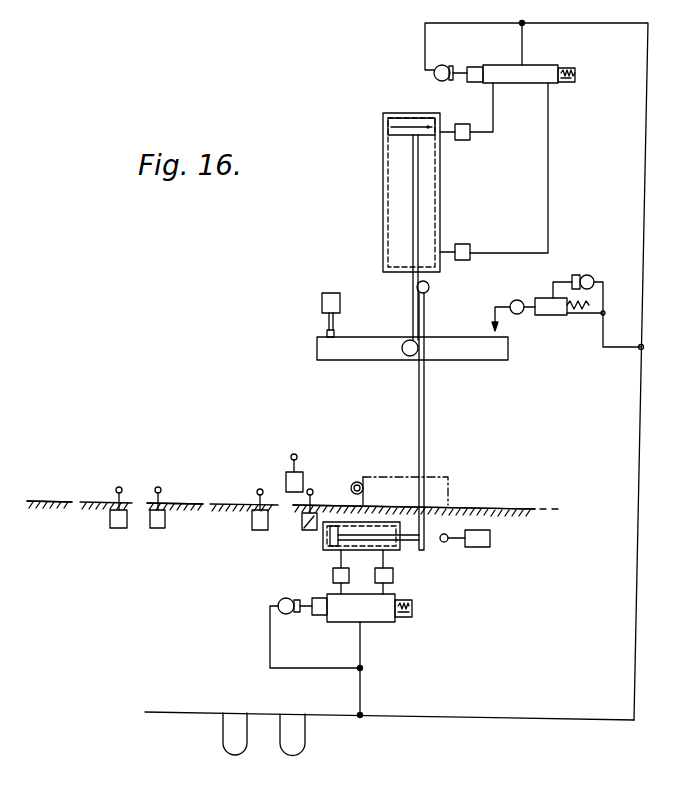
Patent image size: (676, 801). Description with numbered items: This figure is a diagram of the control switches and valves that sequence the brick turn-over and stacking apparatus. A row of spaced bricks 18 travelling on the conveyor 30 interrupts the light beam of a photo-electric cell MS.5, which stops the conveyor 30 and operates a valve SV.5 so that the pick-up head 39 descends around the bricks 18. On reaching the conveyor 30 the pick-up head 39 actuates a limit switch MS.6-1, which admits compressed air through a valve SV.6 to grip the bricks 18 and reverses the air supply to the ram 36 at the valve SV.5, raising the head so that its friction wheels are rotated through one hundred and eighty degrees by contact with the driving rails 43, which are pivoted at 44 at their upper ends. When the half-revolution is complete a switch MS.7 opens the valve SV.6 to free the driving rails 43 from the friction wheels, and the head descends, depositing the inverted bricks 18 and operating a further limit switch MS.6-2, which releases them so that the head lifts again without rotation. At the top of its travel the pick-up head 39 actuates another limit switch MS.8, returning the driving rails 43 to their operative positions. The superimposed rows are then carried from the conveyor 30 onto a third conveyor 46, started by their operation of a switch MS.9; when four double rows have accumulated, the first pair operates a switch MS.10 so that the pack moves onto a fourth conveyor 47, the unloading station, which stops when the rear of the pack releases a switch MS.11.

The ram 36 is at (383, 198).
The pivot 44 is at (429, 287).
The driving rails 43 is at (424, 427).
The pick-up head 39 is at (452, 355).
The bricks 18 is at (446, 478).
The conveyor 30 is at (500, 508).
The fourth conveyor 47 is at (58, 500).
The third conveyor 46 is at (196, 499).
The valve SV.5 is at (433, 76).
The valve SV.6 is at (590, 276).
The photo-electric cell MS.5 is at (356, 482).
The limit switch MS.6-1 is at (325, 503).
The limit switch MS.6-2 is at (286, 478).
The switch MS.7 is at (484, 548).
The limit switch MS.8 is at (329, 292).
The switch MS.9 is at (253, 531).
The switch MS.10 is at (155, 528).
The switch MS.11 is at (110, 527).